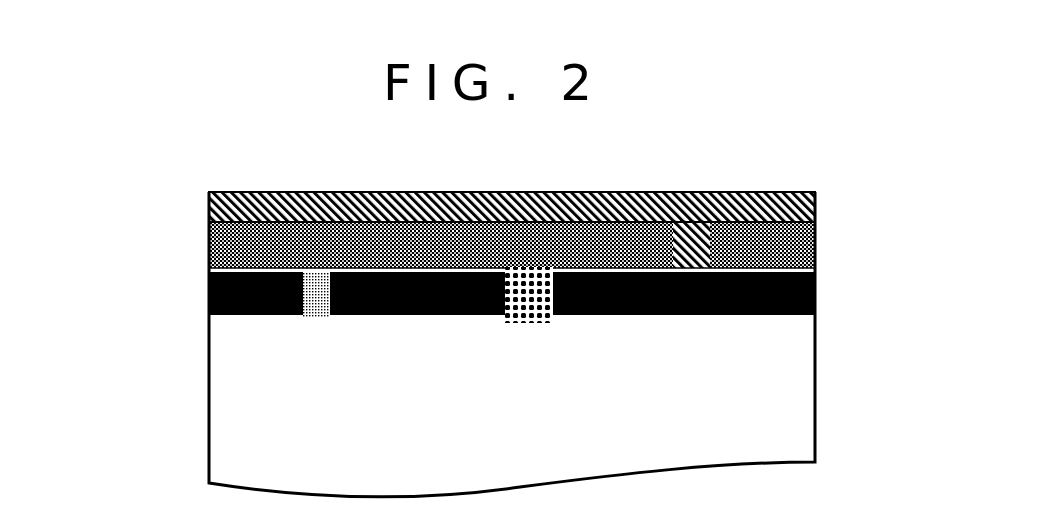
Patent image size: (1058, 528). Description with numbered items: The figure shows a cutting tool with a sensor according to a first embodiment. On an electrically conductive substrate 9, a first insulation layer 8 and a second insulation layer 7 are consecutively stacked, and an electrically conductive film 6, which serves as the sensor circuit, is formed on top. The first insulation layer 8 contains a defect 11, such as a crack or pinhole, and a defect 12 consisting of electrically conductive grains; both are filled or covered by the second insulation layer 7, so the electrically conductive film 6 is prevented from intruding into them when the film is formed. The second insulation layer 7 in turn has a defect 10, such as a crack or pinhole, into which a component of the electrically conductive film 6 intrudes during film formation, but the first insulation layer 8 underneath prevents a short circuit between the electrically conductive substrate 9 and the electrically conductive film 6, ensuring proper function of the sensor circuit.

The electrically conductive film 6 is at (204, 199).
The second insulation layer 7 is at (204, 242).
The first insulation layer 8 is at (204, 288).
The electrically conductive substrate 9 is at (209, 381).
The defect 10 is at (708, 192).
The defect 11 is at (318, 318).
The defect 12 is at (535, 322).